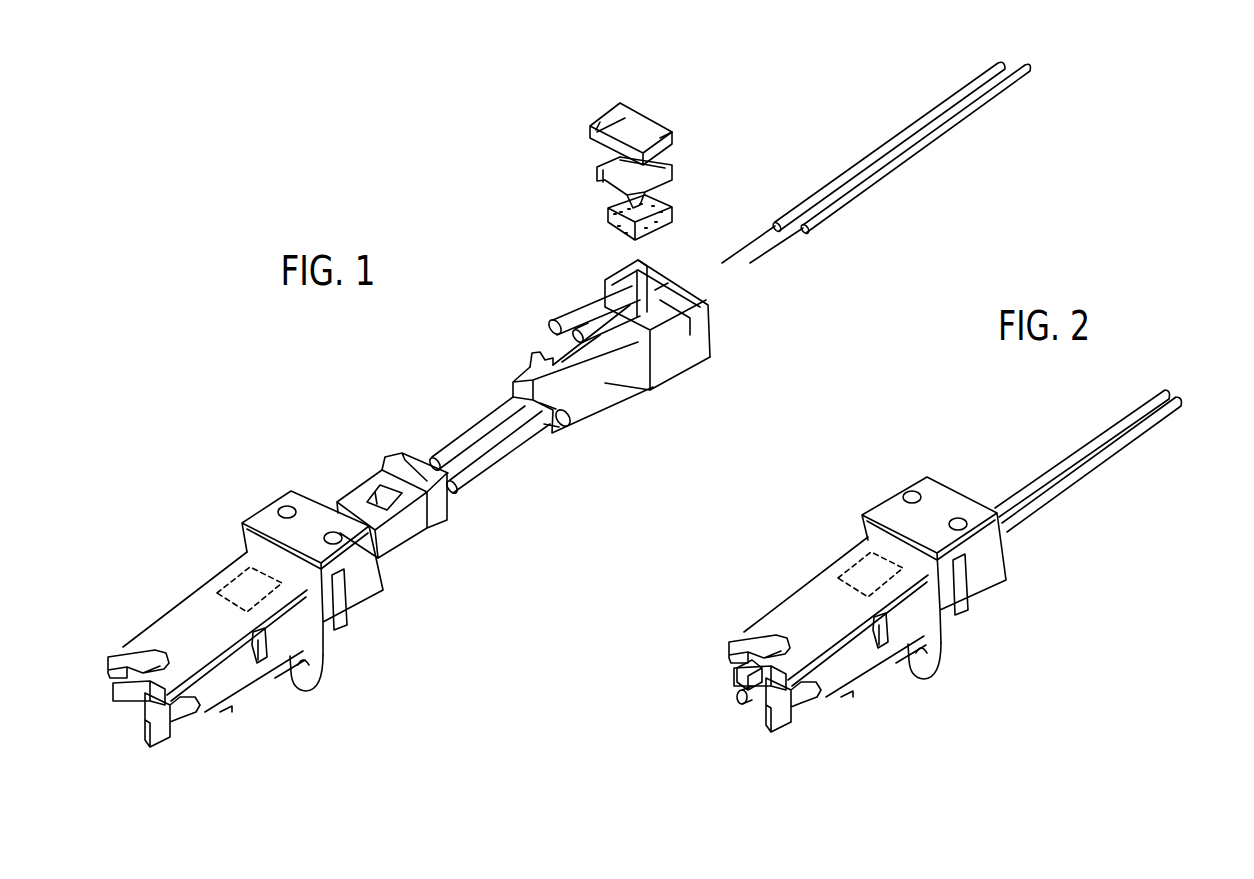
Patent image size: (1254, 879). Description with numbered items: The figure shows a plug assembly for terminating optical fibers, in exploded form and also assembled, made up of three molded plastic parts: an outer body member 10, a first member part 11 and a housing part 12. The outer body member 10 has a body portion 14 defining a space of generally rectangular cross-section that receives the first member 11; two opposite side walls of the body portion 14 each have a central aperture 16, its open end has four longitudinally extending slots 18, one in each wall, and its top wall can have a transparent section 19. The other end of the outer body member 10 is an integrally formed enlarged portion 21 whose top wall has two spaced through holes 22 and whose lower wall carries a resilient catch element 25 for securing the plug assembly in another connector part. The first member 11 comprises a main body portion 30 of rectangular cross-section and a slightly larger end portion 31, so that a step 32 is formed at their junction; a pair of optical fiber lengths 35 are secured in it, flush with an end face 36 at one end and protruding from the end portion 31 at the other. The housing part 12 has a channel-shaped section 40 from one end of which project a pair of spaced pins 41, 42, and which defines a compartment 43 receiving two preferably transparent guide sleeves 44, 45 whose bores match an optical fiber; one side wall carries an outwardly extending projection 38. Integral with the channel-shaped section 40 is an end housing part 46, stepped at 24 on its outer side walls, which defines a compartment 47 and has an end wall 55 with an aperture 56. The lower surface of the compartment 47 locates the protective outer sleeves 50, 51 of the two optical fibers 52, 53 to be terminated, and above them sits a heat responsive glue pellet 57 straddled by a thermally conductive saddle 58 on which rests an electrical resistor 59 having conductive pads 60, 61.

In FIG. 1, the outer body member 10 is at (172, 597).
In FIG. 2, the outer body member 10 is at (795, 590).
In FIG. 1, the first member part 11 is at (360, 466).
In FIG. 1, the housing part 12 is at (605, 414).
In FIG. 1, the body portion 14 is at (206, 719).
In FIG. 2, the body portion 14 is at (833, 692).
In FIG. 1, the aperture 16 is at (259, 666).
In FIG. 2, the aperture 16 is at (883, 662).
In FIG. 1, the longitudinally extending slots 18 is at (143, 663).
In FIG. 2, the longitudinally extending slots 18 is at (737, 637).
In FIG. 1, the transparent section 19 is at (213, 558).
In FIG. 2, the transparent section 19 is at (840, 547).
In FIG. 1, the enlarged portion 21 is at (361, 613).
In FIG. 2, the enlarged portion 21 is at (988, 605).
In FIG. 1, the through holes 22 is at (332, 532).
In FIG. 2, the through holes 22 is at (957, 518).
In FIG. 1, the step 24 is at (680, 372).
In FIG. 1, the resilient catch element 25 is at (308, 694).
In FIG. 2, the resilient catch element 25 is at (927, 683).
In FIG. 1, the main body portion 30 is at (401, 538).
In FIG. 1, the end portion 31 is at (397, 457).
In FIG. 1, the step 32 is at (418, 521).
In FIG. 1, the optical fiber lengths 35 is at (455, 458).
In FIG. 2, the optical fiber lengths 35 is at (740, 702).
In FIG. 2, the end face 36 is at (737, 675).
In FIG. 1, the projection 38 is at (530, 363).
In FIG. 1, the channel-shaped section 40 is at (573, 410).
In FIG. 1, the pin 41 is at (512, 441).
In FIG. 1, the pin 42 is at (468, 431).
In FIG. 1, the compartment 43 is at (588, 352).
In FIG. 1, the guide sleeve 44 is at (607, 308).
In FIG. 1, the guide sleeve 45 is at (573, 315).
In FIG. 1, the end housing part 46 is at (673, 347).
In FIG. 1, the compartment 47 is at (683, 320).
In FIG. 1, the protective outer sleeve 50 is at (867, 157).
In FIG. 2, the protective outer sleeve 50 is at (1087, 441).
In FIG. 1, the protective outer sleeve 51 is at (907, 152).
In FIG. 2, the protective outer sleeve 51 is at (1127, 437).
In FIG. 1, the optical fiber 52 is at (743, 247).
In FIG. 1, the optical fiber 53 is at (785, 240).
In FIG. 1, the end wall 55 is at (643, 263).
In FIG. 1, the aperture 56 is at (659, 285).
In FIG. 1, the glue pellet 57 is at (608, 213).
In FIG. 1, the thermally conductive saddle 58 is at (602, 167).
In FIG. 1, the electrical resistor 59 is at (633, 125).
In FIG. 1, the conductive pad 60 is at (603, 114).
In FIG. 1, the conductive pad 61 is at (670, 138).